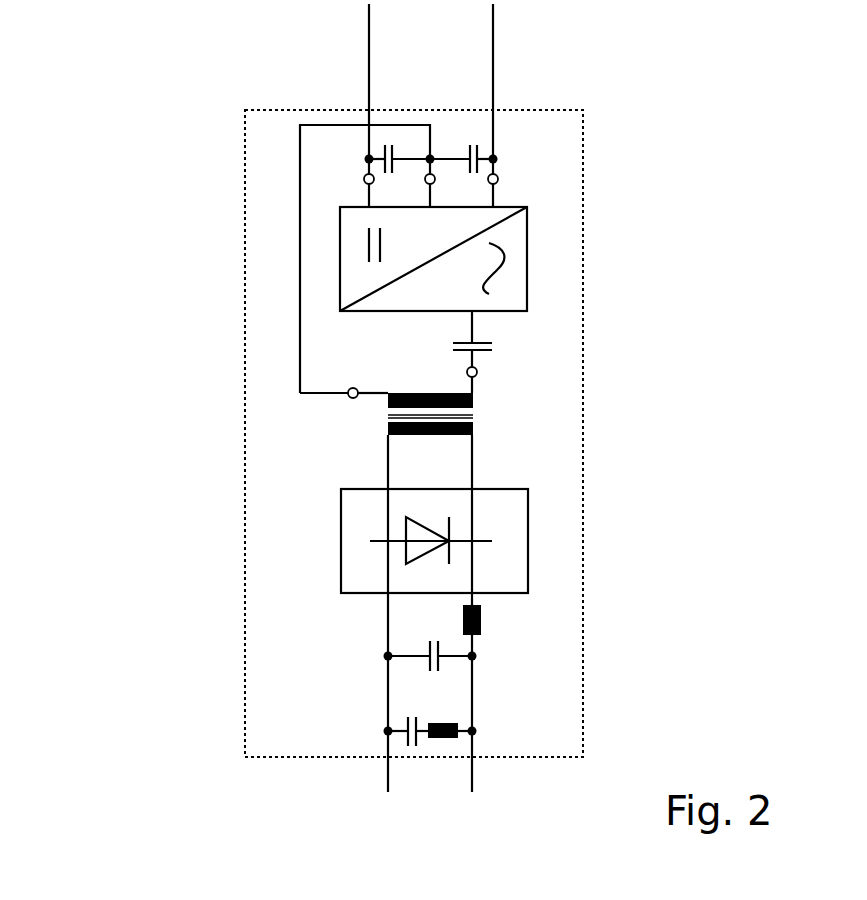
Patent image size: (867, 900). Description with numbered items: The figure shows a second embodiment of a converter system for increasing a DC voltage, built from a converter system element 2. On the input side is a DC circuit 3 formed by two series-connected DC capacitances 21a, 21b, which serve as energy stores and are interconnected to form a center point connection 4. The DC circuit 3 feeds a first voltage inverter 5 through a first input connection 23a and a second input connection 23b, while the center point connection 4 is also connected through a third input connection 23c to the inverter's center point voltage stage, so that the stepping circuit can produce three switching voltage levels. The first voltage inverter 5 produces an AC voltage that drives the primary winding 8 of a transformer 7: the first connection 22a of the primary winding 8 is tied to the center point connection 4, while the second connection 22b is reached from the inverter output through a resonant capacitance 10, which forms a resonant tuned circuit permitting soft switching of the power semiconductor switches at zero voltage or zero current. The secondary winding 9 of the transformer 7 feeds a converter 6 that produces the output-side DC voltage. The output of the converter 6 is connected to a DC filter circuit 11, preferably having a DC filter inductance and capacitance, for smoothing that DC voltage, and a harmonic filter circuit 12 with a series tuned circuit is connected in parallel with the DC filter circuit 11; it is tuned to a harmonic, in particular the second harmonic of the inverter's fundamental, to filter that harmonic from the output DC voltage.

The converter system element 2 is at (583, 640).
The input-side DC circuit 3 is at (395, 137).
The center point connection 4 is at (603, 103).
The first voltage inverter 5 is at (527, 268).
The converter 6 is at (528, 545).
The transformer 7 is at (424, 459).
The primary winding 8 is at (473, 400).
The secondary winding 9 is at (473, 428).
The resonant capacitance 10 is at (508, 342).
The DC filter circuit 11 is at (410, 636).
The harmonic filter circuit 12 is at (352, 719).
The DC capacitance 21a is at (479, 146).
The DC capacitance 21b is at (382, 152).
The first connection of the primary winding 22a is at (348, 390).
The second connection of the primary winding 22b is at (478, 372).
The first input connection 23a is at (498, 179).
The second input connection 23b is at (362, 174).
The third input connection 23c is at (425, 180).